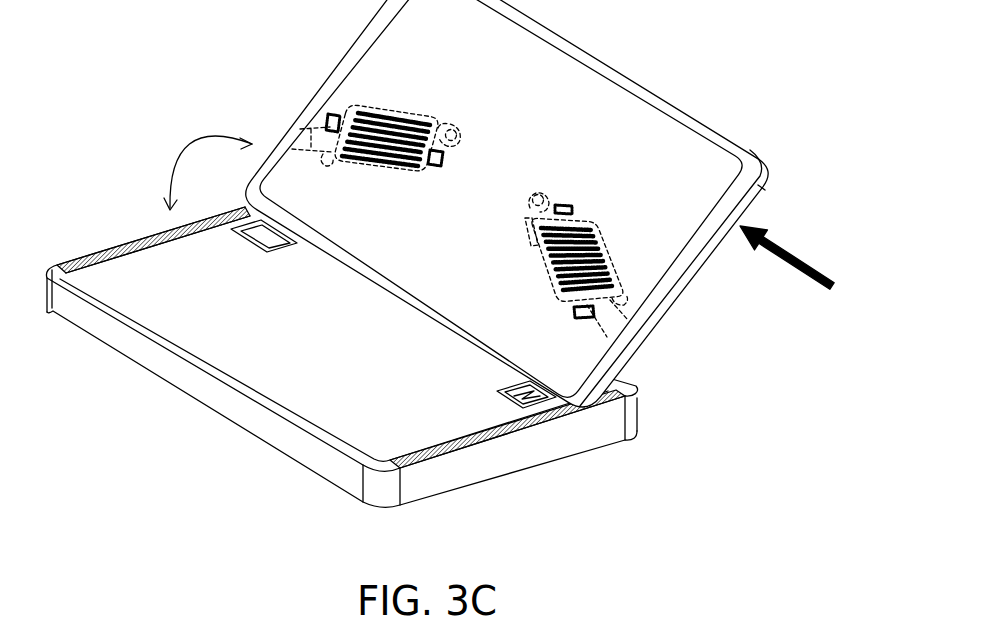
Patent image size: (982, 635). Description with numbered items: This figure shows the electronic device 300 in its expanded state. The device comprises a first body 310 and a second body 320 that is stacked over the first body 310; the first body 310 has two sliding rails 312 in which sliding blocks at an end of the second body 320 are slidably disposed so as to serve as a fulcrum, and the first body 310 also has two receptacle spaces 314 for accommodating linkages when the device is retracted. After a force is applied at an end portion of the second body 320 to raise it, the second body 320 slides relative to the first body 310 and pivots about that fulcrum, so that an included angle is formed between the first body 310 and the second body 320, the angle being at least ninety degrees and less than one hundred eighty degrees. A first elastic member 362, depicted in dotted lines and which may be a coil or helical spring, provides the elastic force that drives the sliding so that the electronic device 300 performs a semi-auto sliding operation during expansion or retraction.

The electronic device 300 is at (440, 268).
The first body 310 is at (253, 417).
The sliding rails 312 is at (428, 439).
The receptacle spaces 314 is at (512, 399).
The second body 320 is at (658, 313).
The first elastic member 362 is at (393, 110).